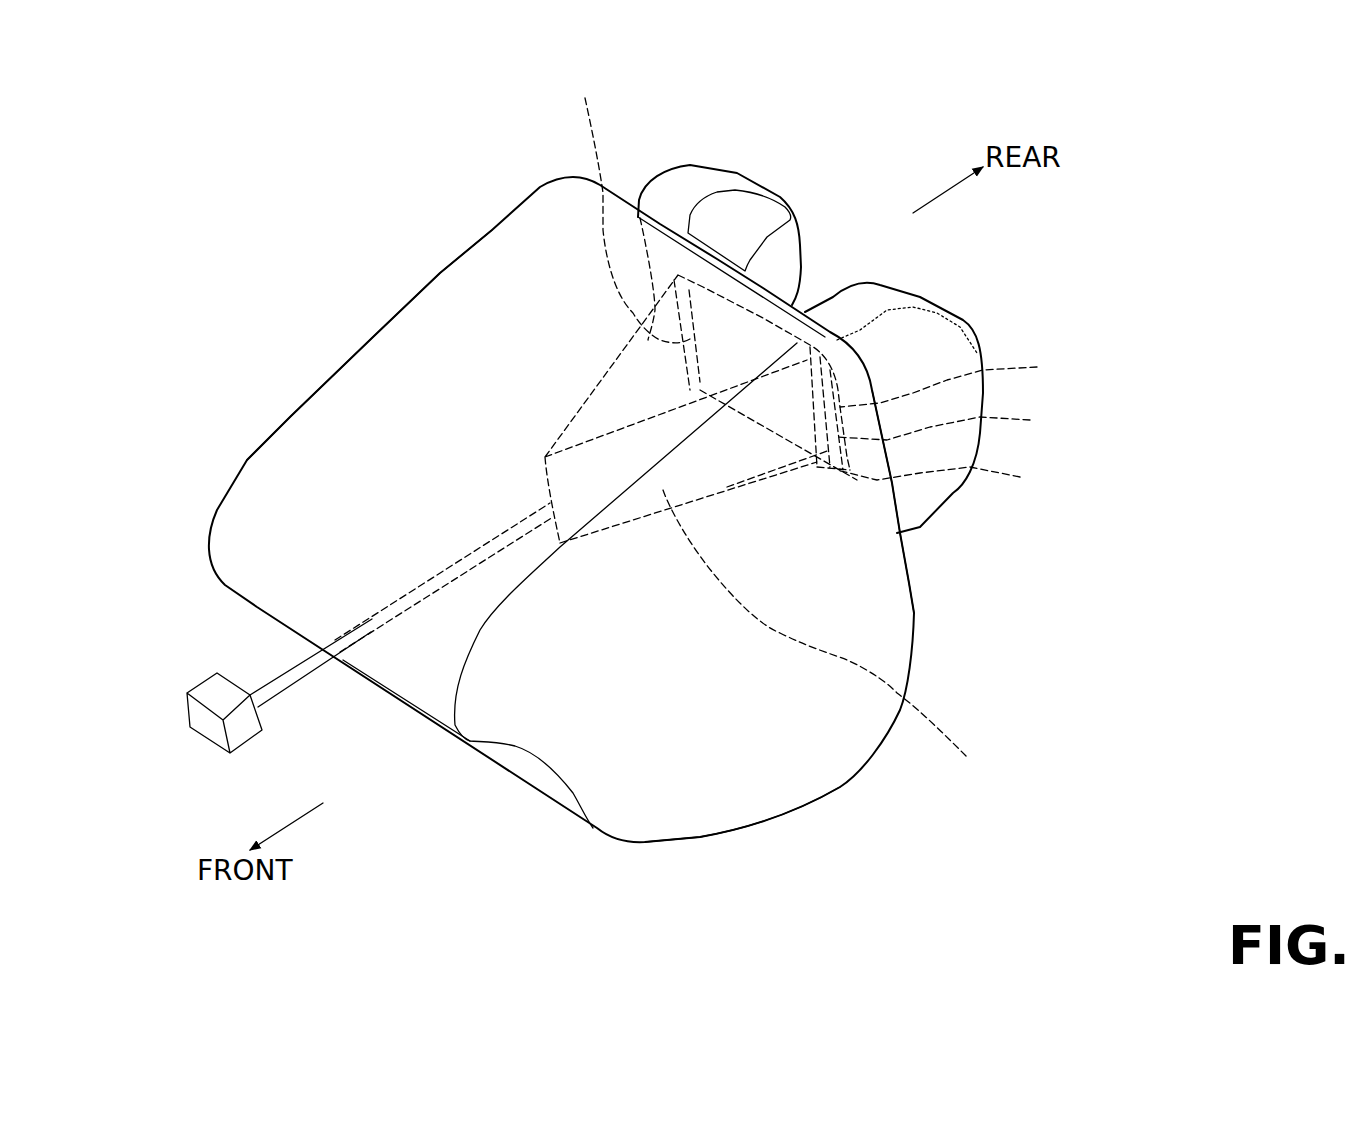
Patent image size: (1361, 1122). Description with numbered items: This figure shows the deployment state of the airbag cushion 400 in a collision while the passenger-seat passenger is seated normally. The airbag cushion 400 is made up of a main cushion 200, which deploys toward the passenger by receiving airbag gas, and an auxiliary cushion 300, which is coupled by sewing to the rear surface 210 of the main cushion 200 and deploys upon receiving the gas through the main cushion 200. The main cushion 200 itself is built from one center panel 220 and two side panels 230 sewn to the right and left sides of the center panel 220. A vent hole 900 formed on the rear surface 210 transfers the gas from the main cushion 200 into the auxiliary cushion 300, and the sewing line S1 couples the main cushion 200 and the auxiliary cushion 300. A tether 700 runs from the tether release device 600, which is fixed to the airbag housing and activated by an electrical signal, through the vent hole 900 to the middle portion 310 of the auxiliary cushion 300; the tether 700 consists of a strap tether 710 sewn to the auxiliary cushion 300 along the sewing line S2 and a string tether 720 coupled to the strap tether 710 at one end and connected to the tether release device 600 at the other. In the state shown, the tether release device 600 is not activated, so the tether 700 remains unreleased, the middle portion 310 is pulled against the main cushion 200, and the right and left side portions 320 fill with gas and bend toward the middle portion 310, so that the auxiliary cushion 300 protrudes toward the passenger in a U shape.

The main cushion 200 is at (583, 832).
The rear surface 210 is at (910, 583).
The center panel 220 is at (358, 471).
The side panel 230 is at (765, 749).
The auxiliary cushion 300 is at (743, 167).
The middle portion 310 is at (793, 213).
The side portion 320 is at (697, 187).
The airbag cushion 400 is at (418, 278).
The tether release device 600 is at (210, 693).
The tether 700 is at (572, 430).
The strap tether 710 is at (600, 390).
The string tether 720 is at (353, 617).
The vent hole 900 is at (961, 421).
The sewing line S1 is at (948, 478).
The sewing line S2 is at (820, 236).